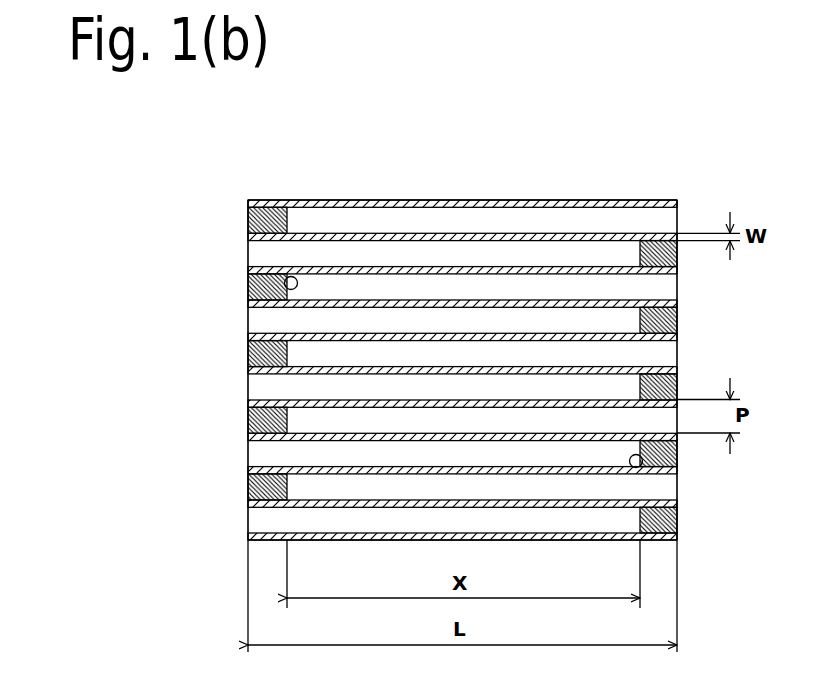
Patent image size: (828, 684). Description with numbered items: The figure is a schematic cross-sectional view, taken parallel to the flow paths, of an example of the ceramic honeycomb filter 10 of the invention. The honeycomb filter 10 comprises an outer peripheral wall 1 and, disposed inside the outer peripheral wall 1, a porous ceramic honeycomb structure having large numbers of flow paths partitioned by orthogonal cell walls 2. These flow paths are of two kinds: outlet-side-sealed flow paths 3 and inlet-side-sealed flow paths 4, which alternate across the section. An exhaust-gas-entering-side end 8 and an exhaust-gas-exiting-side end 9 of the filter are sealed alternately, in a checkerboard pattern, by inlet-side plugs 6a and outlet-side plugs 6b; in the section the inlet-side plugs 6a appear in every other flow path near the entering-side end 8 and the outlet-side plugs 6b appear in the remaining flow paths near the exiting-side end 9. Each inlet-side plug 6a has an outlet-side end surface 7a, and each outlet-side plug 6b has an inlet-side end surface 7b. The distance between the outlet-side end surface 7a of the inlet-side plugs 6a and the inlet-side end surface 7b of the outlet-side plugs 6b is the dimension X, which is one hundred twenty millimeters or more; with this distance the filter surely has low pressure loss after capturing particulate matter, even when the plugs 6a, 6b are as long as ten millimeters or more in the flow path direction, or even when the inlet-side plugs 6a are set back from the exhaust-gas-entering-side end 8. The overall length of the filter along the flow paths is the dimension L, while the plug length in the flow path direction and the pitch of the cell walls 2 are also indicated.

The honeycomb filter 10 is at (241, 166).
The outer peripheral wall 1 is at (355, 205).
The cell walls 2 is at (538, 237).
The outlet-side-sealed flow paths 3 is at (428, 250).
The inlet-side-sealed flow paths 4 is at (475, 290).
The inlet-side plugs 6a is at (248, 285).
The outlet-side plugs 6b is at (665, 318).
The outlet-side end surface of the inlet-side plugs 7a is at (290, 271).
The inlet-side end surface of the outlet-side plugs 7b is at (636, 468).
The exhaust-gas-entering-side end 8 is at (248, 388).
The exhaust-gas-exiting-side end 9 is at (677, 352).